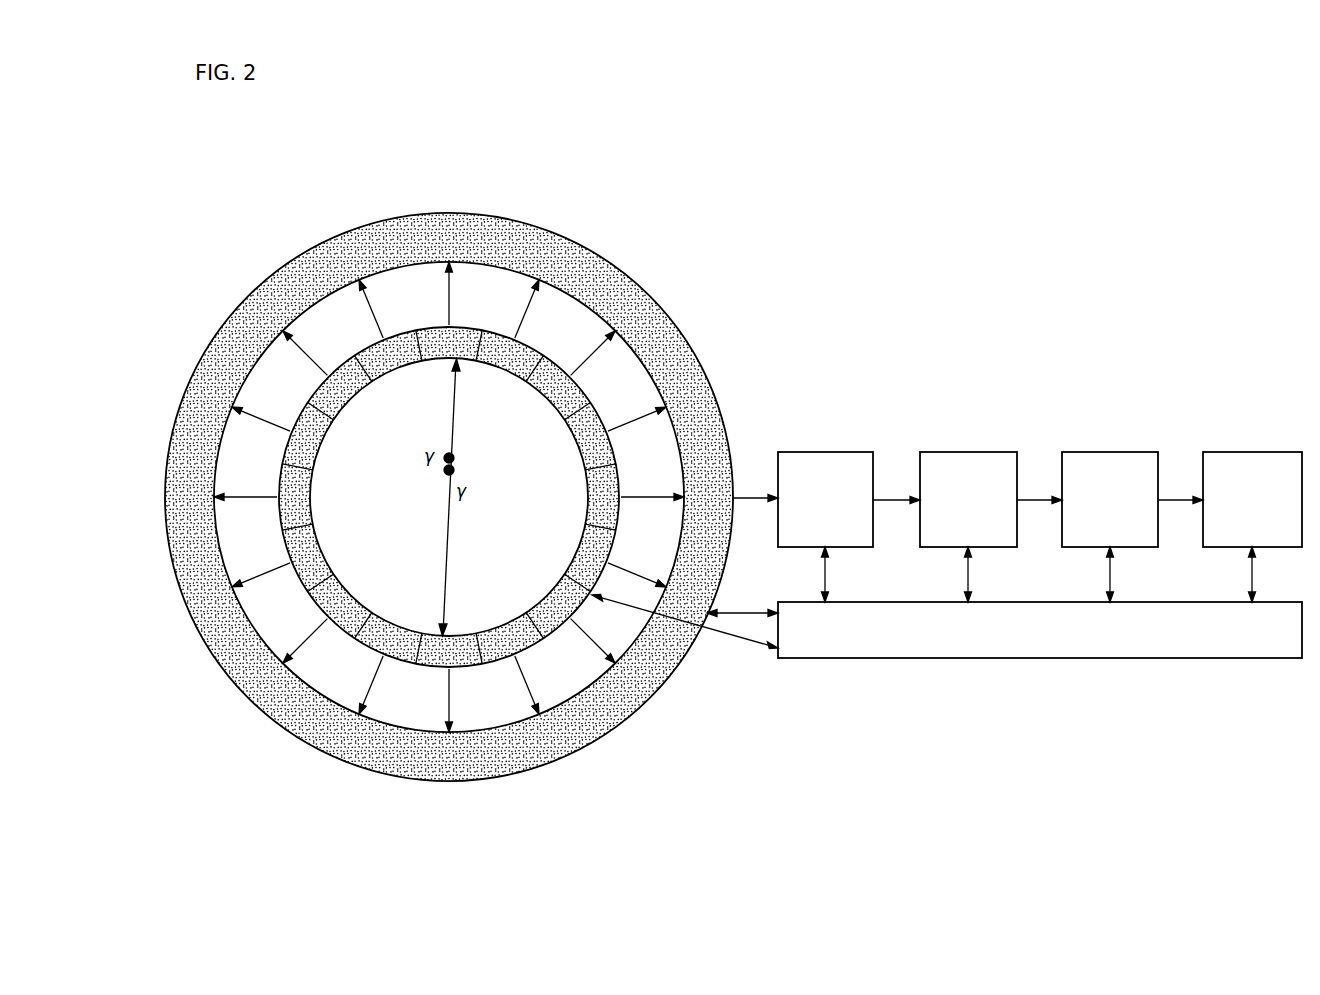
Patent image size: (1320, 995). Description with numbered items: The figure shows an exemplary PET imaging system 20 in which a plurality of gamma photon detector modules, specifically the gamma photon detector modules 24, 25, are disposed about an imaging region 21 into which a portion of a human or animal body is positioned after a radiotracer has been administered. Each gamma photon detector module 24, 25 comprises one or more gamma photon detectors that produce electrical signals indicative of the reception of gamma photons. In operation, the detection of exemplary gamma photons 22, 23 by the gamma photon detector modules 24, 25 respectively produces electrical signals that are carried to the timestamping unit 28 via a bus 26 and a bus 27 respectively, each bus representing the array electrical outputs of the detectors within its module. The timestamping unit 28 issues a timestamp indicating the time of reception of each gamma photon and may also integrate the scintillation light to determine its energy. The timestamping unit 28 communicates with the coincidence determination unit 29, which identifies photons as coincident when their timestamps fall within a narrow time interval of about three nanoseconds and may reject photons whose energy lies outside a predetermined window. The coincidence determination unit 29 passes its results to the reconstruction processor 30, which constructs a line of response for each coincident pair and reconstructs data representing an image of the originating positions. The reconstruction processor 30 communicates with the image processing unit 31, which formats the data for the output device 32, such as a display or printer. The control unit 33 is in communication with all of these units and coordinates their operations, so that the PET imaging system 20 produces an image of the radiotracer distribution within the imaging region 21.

The PET imaging system 20 is at (768, 160).
The imaging region 21 is at (480, 433).
The gamma photon 22 is at (442, 455).
The gamma photon 23 is at (443, 485).
The gamma photon detector module 24 is at (450, 293).
The gamma photon detector module 25 is at (445, 693).
The bus 26 is at (455, 343).
The bus 27 is at (443, 655).
The timestamping unit 28 is at (675, 353).
The coincidence determination unit 29 is at (813, 470).
The reconstruction processor 30 is at (955, 470).
The image processing unit 31 is at (1085, 470).
The output device 32 is at (1228, 470).
The control unit 33 is at (1105, 647).